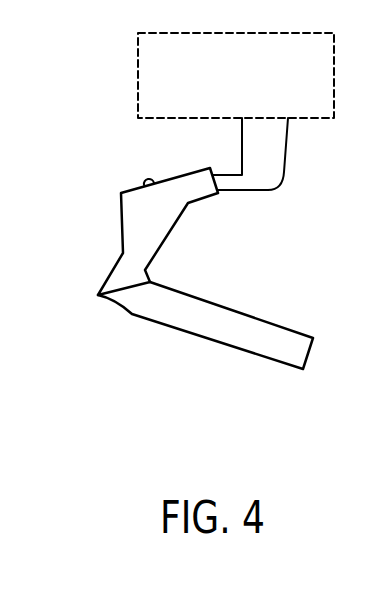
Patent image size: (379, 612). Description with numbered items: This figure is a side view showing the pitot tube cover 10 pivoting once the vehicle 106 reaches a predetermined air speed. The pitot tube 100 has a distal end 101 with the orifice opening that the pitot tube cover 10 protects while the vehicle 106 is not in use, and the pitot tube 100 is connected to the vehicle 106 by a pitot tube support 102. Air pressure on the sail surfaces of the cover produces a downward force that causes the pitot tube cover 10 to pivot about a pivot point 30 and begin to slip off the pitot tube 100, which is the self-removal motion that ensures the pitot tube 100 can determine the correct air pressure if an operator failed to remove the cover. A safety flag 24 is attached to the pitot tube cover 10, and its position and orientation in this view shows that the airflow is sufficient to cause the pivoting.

The pitot tube cover 10 is at (180, 238).
The safety flag 24 is at (268, 332).
The pivot point 30 is at (171, 201).
The pitot tube 100 is at (151, 180).
The distal end 101 is at (113, 182).
The pitot tube support 102 is at (273, 160).
The vehicle 106 is at (253, 88).